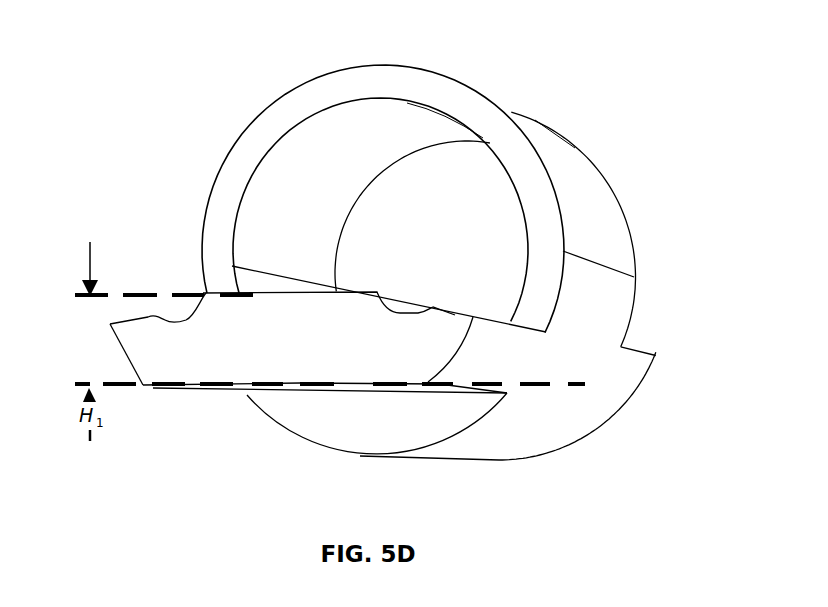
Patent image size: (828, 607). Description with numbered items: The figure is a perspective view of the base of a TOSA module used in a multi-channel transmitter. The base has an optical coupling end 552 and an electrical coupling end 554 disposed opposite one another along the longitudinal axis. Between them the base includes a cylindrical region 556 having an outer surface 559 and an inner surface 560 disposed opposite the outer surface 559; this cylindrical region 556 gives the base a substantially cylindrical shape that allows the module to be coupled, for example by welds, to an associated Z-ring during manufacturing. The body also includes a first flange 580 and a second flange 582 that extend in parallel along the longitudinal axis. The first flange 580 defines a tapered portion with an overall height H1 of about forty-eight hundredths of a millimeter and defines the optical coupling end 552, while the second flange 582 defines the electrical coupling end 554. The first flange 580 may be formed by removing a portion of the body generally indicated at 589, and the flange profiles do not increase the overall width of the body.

The optical coupling end 552 is at (173, 382).
The electrical coupling end 554 is at (670, 345).
The cylindrical region 556 is at (444, 56).
The outer surface 559 is at (628, 188).
The inner surface 560 is at (356, 190).
The first flange 580 is at (283, 372).
The second flange 582 is at (614, 407).
The removed portion of the body 589 is at (416, 438).